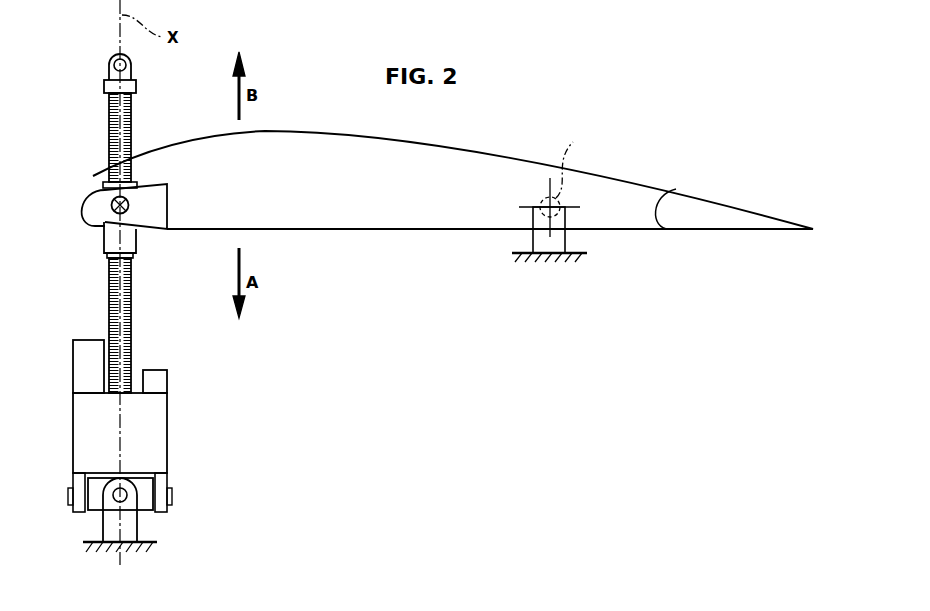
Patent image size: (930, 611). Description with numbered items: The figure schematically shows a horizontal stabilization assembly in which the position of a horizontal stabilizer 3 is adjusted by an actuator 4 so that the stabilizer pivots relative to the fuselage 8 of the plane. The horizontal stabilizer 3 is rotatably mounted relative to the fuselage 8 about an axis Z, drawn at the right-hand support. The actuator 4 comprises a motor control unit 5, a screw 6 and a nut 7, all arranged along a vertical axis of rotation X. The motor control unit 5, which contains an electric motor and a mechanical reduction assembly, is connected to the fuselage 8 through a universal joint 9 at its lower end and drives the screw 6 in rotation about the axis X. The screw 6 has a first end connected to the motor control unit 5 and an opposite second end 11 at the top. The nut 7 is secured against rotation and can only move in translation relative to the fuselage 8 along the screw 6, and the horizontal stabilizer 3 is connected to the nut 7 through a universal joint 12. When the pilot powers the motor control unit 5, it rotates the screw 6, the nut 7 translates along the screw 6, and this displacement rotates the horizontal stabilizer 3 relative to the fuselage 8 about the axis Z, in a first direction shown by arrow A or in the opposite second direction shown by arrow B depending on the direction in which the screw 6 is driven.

The horizontal stabilizer 3 is at (466, 165).
The actuator 4 is at (58, 85).
The motor control unit 5 is at (150, 434).
The screw 6 is at (141, 324).
The nut 7 is at (142, 231).
The fuselage 8 is at (582, 252).
The universal joint 9 is at (93, 524).
The second end 11 is at (137, 93).
The universal joint 12 is at (101, 196).